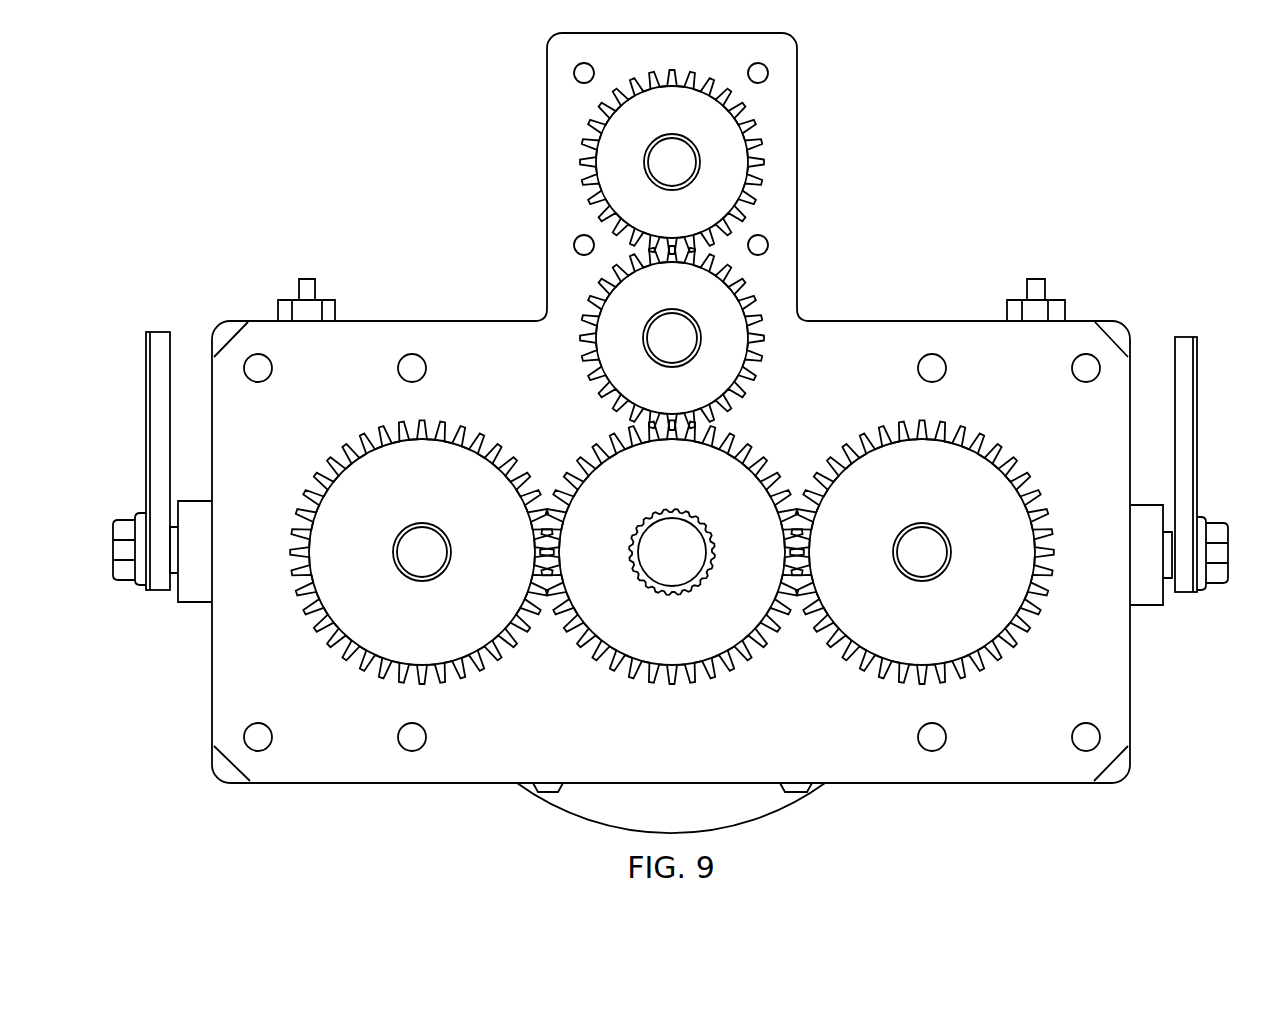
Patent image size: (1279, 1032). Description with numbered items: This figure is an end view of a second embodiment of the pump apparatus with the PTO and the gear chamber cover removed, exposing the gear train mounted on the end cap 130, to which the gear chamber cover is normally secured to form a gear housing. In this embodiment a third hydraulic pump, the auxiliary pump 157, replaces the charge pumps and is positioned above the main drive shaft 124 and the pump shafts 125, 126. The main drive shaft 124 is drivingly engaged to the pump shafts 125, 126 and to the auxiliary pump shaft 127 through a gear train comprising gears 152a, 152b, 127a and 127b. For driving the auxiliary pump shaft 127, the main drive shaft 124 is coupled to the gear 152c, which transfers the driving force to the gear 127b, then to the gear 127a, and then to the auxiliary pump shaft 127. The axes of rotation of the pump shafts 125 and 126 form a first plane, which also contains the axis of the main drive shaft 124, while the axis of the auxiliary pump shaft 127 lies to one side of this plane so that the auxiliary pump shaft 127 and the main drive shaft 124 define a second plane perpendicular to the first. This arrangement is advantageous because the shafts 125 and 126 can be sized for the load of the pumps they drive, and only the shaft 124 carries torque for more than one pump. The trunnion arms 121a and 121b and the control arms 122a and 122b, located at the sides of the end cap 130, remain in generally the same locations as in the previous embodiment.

The auxiliary pump 157 is at (671, 433).
The end cap 130 is at (351, 400).
The auxiliary pump shaft 127 is at (656, 172).
The gear 127a is at (695, 224).
The gear 127b is at (695, 399).
The gear 152b is at (398, 629).
The gear 152c is at (647, 639).
The gear 152a is at (897, 629).
The pump shaft 126 is at (405, 562).
The main drive shaft 124 is at (655, 562).
The pump shaft 125 is at (905, 562).
The control arm 122b is at (158, 332).
The control arm 122a is at (1188, 337).
The trunnion arm 121b is at (175, 582).
The trunnion arm 121a is at (1170, 582).